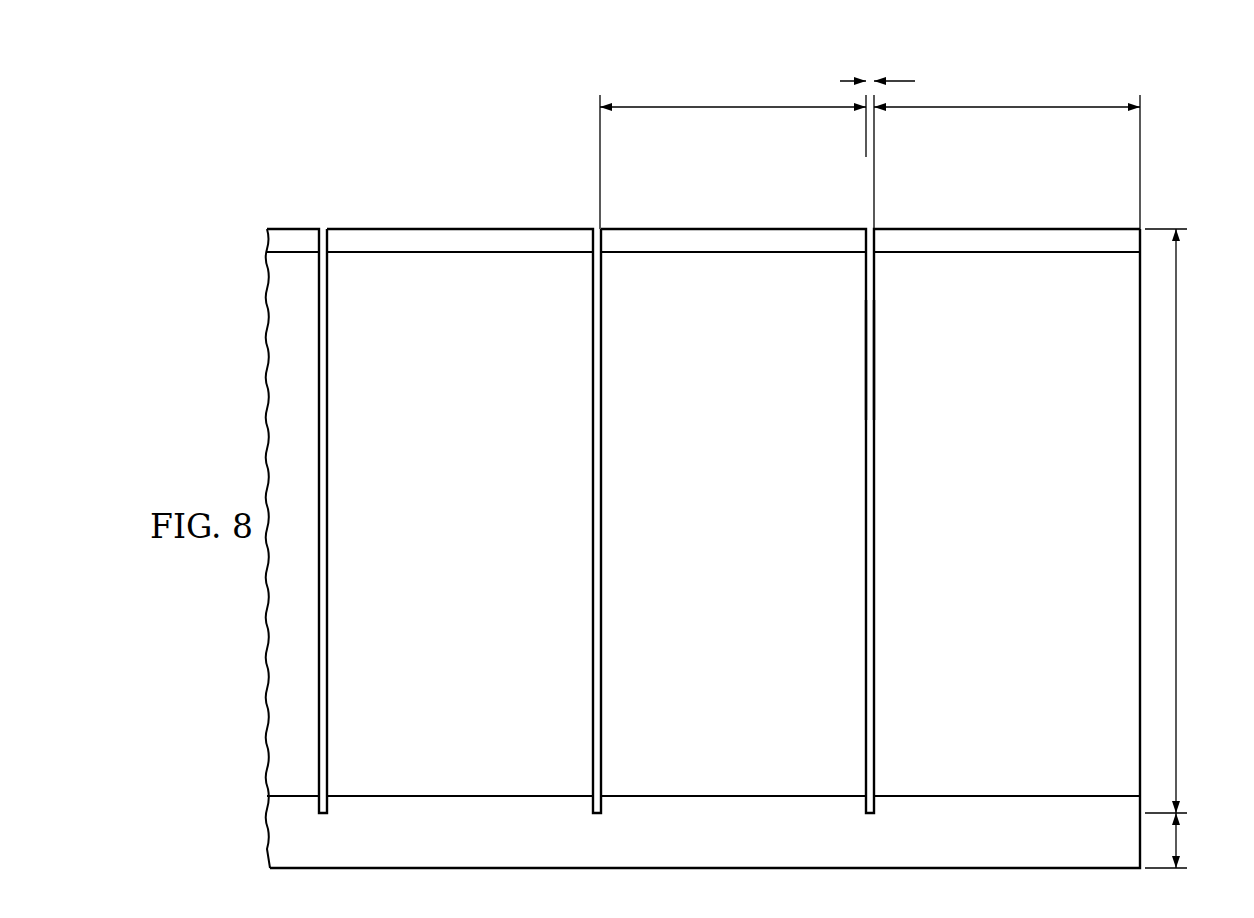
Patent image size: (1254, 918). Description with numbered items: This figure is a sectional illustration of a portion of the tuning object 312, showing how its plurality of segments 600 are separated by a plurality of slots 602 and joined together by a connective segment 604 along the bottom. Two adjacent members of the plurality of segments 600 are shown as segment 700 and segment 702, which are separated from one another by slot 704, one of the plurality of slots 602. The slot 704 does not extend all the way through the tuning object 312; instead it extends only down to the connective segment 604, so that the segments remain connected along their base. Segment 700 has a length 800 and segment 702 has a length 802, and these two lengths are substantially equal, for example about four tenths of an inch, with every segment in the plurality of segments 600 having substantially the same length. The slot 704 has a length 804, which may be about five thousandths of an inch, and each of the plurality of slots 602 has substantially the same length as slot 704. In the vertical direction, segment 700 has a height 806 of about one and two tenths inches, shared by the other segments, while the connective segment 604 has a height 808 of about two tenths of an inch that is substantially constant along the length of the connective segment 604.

The tuning object 312 is at (295, 228).
The plurality of segments 600 is at (702, 227).
The plurality of slots 602 is at (866, 217).
The connective segment 604 is at (752, 846).
The segment 700 is at (1026, 540).
The segment 702 is at (752, 537).
The slot 704 is at (868, 359).
The length 800 is at (1027, 105).
The length 802 is at (753, 105).
The length 804 is at (893, 80).
The height 806 is at (1176, 522).
The height 808 is at (1178, 840).